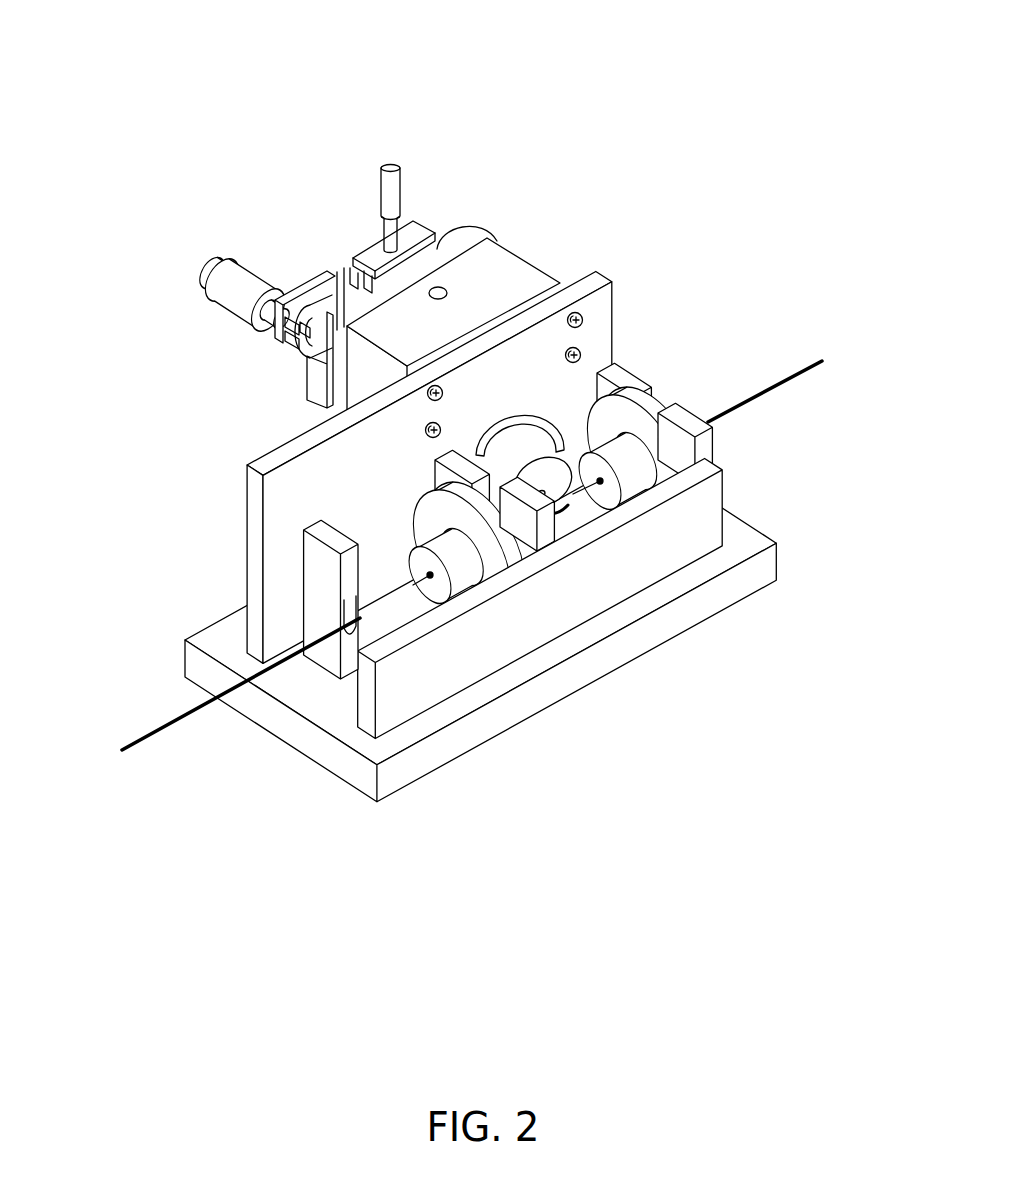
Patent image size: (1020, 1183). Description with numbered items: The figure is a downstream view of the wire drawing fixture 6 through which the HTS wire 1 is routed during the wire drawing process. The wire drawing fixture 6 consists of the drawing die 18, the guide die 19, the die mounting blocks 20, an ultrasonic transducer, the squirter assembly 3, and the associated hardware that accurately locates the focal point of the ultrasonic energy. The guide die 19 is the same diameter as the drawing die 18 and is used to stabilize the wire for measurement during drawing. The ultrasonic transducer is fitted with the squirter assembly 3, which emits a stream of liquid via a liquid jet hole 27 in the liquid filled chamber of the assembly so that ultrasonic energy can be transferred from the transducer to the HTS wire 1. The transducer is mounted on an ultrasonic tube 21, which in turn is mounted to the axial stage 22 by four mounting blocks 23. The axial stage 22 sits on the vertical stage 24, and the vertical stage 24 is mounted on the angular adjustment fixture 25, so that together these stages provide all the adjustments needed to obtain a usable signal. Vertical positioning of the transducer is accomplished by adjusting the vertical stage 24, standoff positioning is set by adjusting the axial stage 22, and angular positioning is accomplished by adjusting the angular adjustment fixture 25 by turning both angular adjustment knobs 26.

The HTS wire 1 is at (780, 383).
The squirter assembly 3 is at (517, 437).
The wire drawing fixture 6 is at (730, 503).
The drawing die 18 is at (502, 547).
The guide die 19 is at (662, 458).
The die mounting blocks 20 is at (648, 492).
The ultrasonic tube 21 is at (230, 313).
The axial stage 22 is at (276, 336).
The mounting blocks 23 is at (307, 390).
The vertical stage 24 is at (372, 255).
The angular adjustment fixture 25 is at (485, 282).
The angular adjustment knobs 26 is at (457, 235).
The liquid jet hole 27 is at (550, 484).